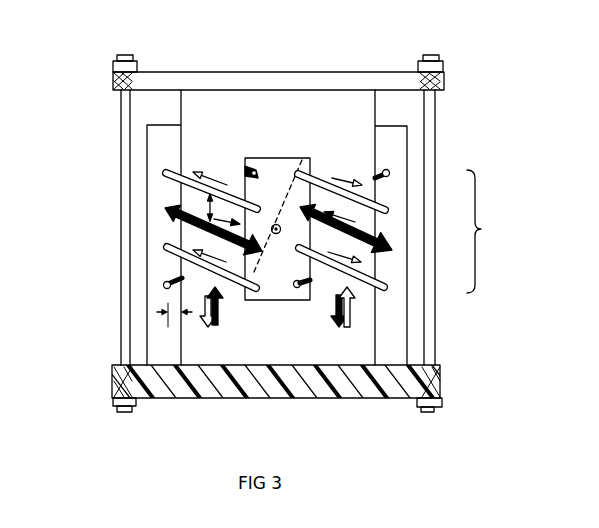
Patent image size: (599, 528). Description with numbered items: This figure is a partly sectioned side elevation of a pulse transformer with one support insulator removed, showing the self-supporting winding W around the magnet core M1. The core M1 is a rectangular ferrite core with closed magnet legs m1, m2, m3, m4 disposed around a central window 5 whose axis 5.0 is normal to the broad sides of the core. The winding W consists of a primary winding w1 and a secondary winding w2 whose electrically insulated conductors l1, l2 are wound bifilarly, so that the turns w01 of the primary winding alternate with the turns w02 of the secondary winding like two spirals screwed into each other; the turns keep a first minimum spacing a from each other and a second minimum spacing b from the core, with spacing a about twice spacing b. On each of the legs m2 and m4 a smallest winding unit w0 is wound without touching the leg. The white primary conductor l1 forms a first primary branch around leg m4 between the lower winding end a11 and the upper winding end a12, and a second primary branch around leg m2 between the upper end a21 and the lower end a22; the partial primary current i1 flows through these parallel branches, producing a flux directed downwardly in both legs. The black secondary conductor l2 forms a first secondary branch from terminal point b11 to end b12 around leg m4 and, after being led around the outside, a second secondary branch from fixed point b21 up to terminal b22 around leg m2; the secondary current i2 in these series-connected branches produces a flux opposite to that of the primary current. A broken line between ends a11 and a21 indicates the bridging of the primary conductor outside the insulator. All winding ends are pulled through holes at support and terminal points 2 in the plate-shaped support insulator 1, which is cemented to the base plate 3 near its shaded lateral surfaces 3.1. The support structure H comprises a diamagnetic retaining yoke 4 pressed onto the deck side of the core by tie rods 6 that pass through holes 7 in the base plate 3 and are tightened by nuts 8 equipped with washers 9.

The support insulators 1 is at (400, 145).
The support and terminal points 2 is at (164, 284).
The base plate 3 is at (428, 383).
The lateral surfaces of the base plate 3.1 is at (233, 388).
The retaining yoke 4 is at (300, 73).
The central window 5 is at (277, 168).
The axis of the window 5.0 is at (276, 224).
The tie rods 6 is at (121, 104).
The holes 7 is at (436, 394).
The tightening nuts 8 is at (114, 398).
The washers 9 is at (131, 400).
The support structure H is at (189, 65).
The magnet core M1 is at (295, 48).
The winding W is at (109, 182).
The magnet leg m1 is at (281, 116).
The magnet leg m2 is at (339, 161).
The magnet leg m3 is at (273, 346).
The magnet leg m4 is at (201, 153).
The first minimum spacing a is at (206, 205).
The second minimum spacing b is at (174, 324).
The partial primary current i1 is at (216, 178).
The partial secondary current i2 is at (236, 221).
The winding end a11 is at (257, 296).
The winding end a12 is at (165, 172).
The winding end a21 is at (298, 170).
The winding end a22 is at (388, 287).
The winding end b11 is at (250, 170).
The winding end b12 is at (163, 288).
The winding end b21 is at (293, 284).
The winding end b22 is at (388, 172).
The winding conductor l1 is at (168, 255).
The winding conductor l2 is at (168, 216).
The smallest winding unit w0 is at (488, 231).
The turns of the primary winding w01 is at (163, 241).
The turns of the secondary winding w02 is at (170, 203).
The primary winding w1 is at (381, 291).
The secondary winding w2 is at (392, 250).